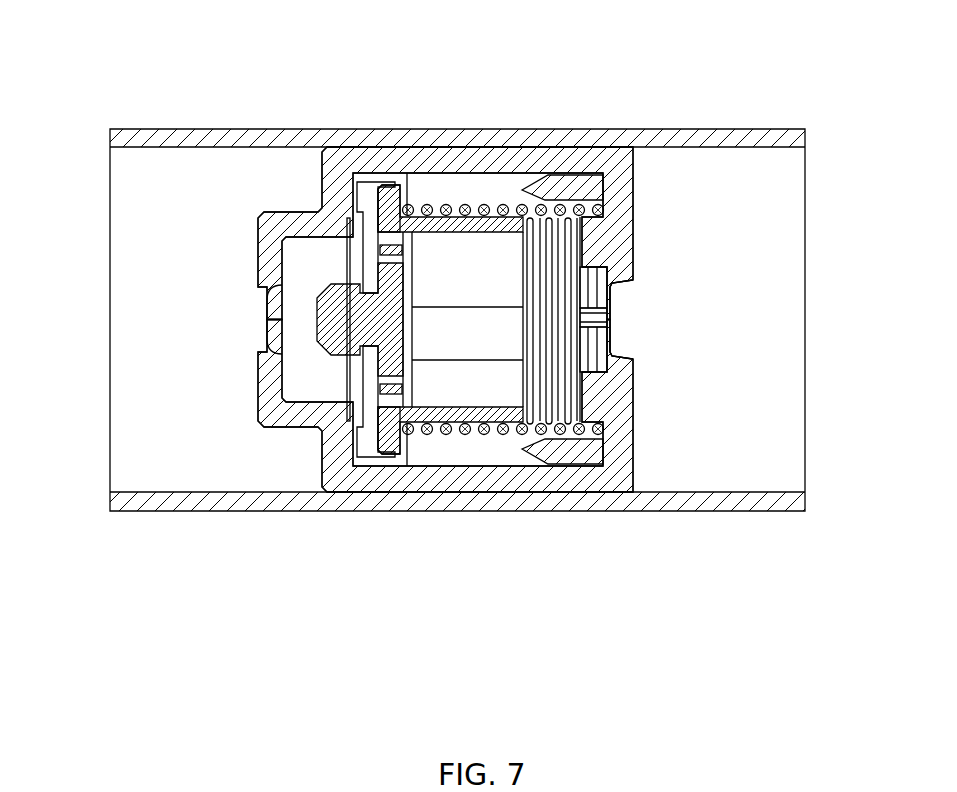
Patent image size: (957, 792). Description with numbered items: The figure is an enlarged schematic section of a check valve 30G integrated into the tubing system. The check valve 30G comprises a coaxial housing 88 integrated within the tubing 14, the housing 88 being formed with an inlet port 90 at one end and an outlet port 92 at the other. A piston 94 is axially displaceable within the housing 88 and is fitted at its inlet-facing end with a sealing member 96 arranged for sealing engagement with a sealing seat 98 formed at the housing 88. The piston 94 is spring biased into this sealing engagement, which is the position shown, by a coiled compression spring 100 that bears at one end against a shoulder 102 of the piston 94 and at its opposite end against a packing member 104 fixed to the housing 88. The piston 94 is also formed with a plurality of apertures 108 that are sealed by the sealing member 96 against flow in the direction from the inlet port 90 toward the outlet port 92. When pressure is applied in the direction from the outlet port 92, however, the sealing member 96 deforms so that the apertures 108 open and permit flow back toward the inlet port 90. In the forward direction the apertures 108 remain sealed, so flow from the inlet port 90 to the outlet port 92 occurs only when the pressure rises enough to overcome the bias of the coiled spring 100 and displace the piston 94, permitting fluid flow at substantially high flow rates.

The tubing 14 is at (748, 128).
The check valve 30G is at (363, 125).
The coaxial housing 88 is at (435, 478).
The inlet port 90 is at (282, 312).
The outlet port 92 is at (620, 318).
The piston 94 is at (460, 213).
The sealing member 96 is at (345, 241).
The sealing seat 98 is at (372, 436).
The coiled compression spring 100 is at (472, 437).
The shoulder 102 is at (388, 183).
The packing member 104 is at (618, 186).
The apertures 108 is at (393, 398).